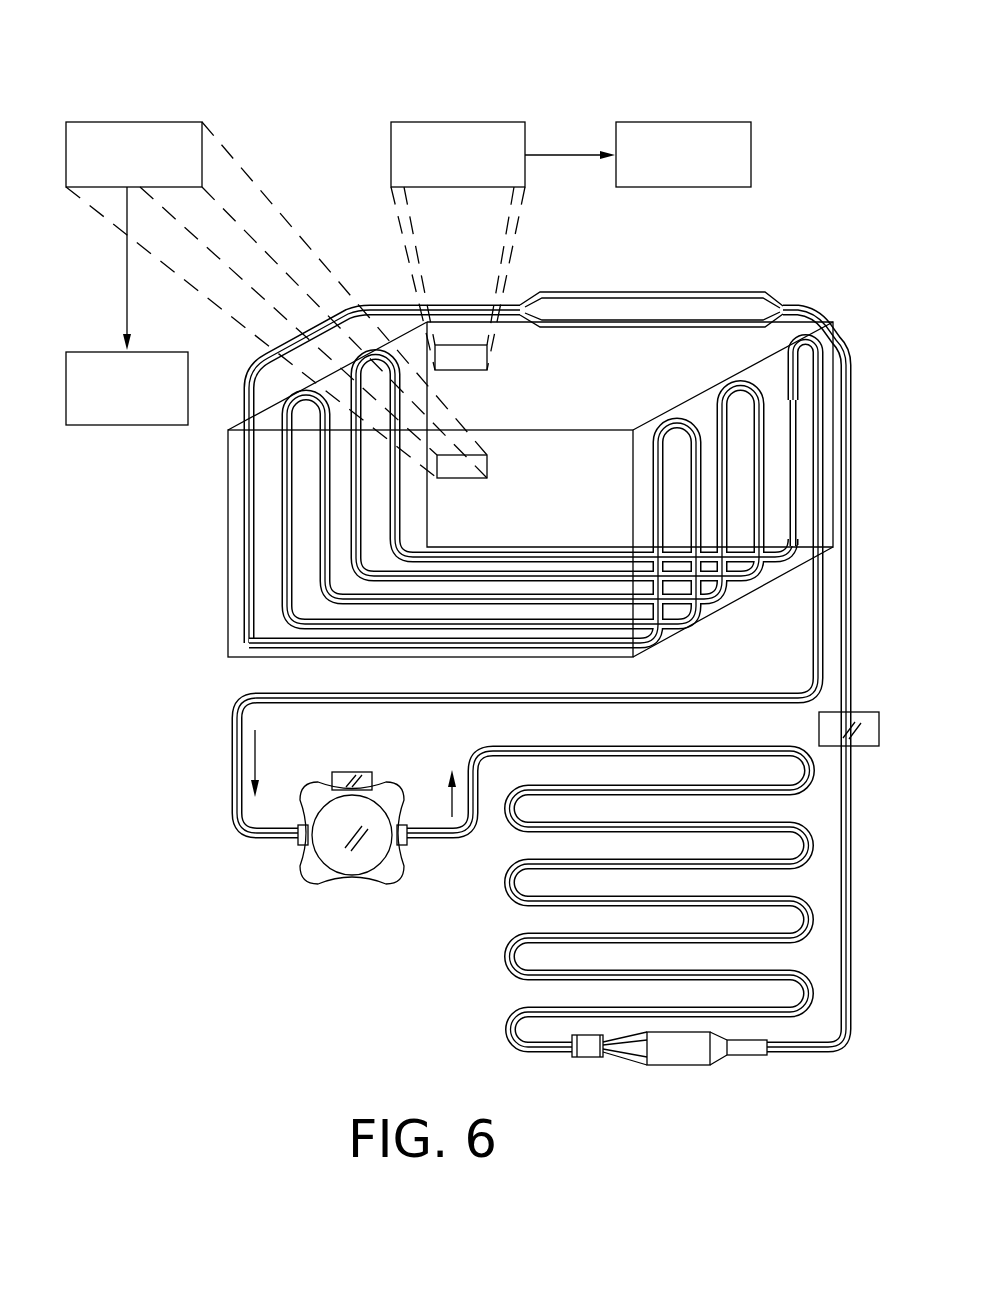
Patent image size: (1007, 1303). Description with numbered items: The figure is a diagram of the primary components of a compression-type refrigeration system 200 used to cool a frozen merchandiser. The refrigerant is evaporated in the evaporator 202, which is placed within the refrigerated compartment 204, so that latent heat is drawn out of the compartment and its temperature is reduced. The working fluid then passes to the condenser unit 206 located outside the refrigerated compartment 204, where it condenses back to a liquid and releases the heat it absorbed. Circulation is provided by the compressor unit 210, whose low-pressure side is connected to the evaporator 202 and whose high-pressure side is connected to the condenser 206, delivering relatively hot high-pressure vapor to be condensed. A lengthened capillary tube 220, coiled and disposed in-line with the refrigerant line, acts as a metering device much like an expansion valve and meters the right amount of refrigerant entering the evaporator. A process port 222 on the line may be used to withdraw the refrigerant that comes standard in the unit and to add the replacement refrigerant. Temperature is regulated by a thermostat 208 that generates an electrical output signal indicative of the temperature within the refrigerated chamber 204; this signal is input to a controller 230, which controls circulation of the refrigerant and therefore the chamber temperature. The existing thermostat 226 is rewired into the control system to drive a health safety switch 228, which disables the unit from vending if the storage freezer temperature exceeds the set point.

The refrigeration system 200 is at (461, 536).
The evaporator 202 is at (229, 631).
The refrigerated compartment 204 is at (565, 512).
The condenser unit 206 is at (502, 957).
The thermostat 208 is at (490, 122).
The compressor unit 210 is at (313, 887).
The capillary tube 220 is at (763, 293).
The process port 222 is at (819, 729).
The existing thermostat 226 is at (150, 122).
The health safety switch 228 is at (108, 352).
The controller 230 is at (694, 122).